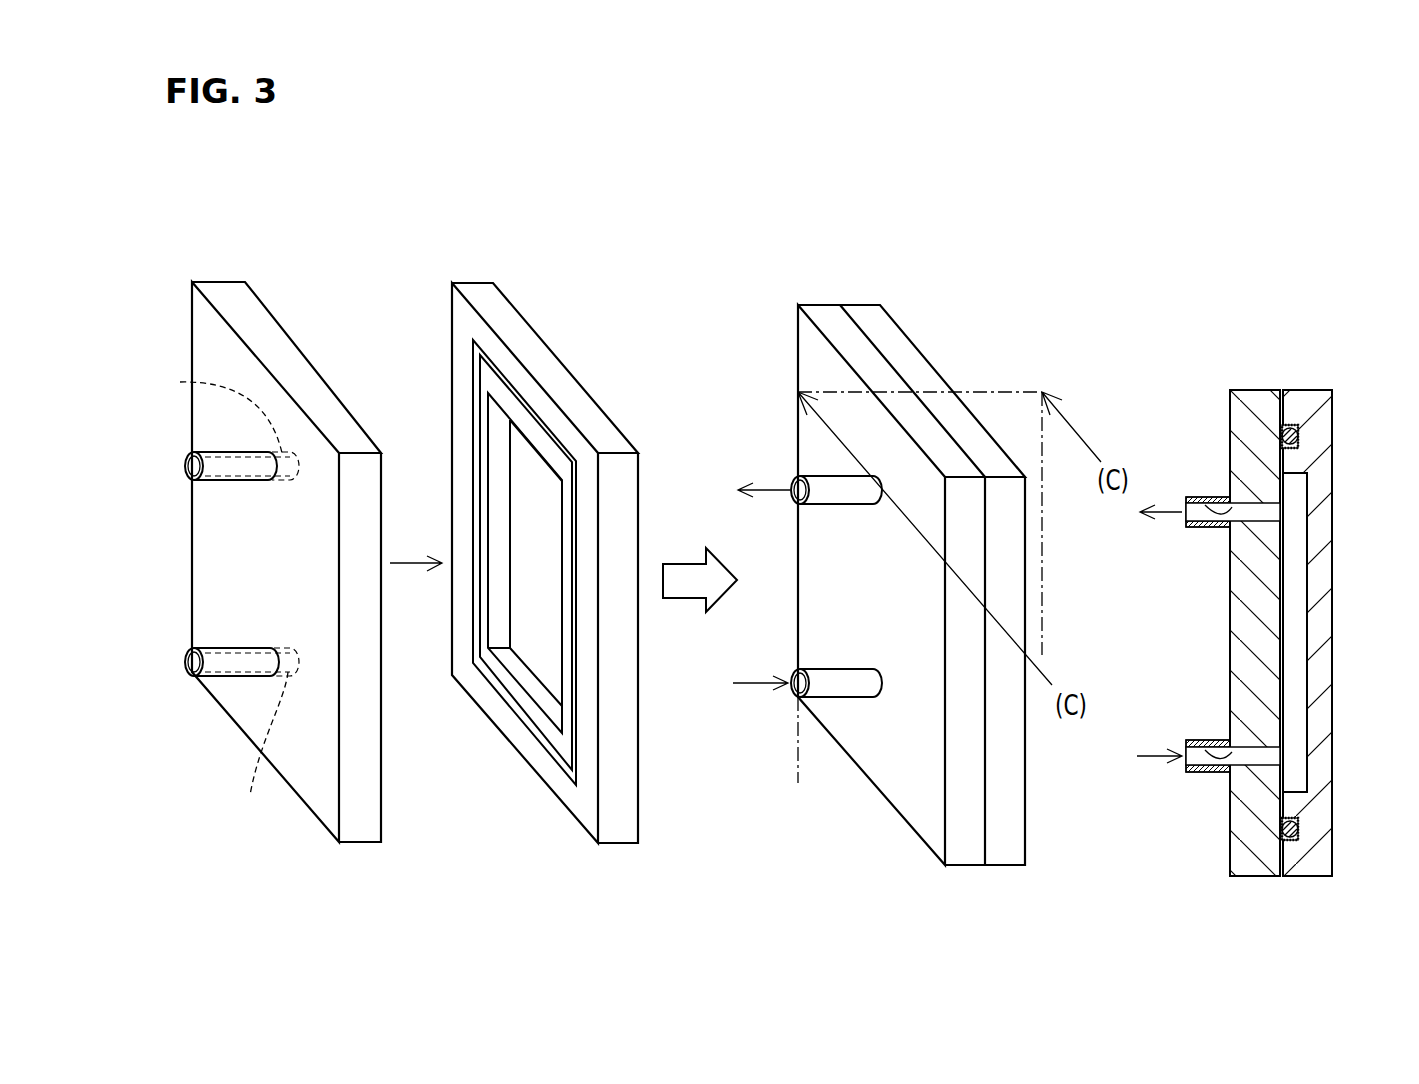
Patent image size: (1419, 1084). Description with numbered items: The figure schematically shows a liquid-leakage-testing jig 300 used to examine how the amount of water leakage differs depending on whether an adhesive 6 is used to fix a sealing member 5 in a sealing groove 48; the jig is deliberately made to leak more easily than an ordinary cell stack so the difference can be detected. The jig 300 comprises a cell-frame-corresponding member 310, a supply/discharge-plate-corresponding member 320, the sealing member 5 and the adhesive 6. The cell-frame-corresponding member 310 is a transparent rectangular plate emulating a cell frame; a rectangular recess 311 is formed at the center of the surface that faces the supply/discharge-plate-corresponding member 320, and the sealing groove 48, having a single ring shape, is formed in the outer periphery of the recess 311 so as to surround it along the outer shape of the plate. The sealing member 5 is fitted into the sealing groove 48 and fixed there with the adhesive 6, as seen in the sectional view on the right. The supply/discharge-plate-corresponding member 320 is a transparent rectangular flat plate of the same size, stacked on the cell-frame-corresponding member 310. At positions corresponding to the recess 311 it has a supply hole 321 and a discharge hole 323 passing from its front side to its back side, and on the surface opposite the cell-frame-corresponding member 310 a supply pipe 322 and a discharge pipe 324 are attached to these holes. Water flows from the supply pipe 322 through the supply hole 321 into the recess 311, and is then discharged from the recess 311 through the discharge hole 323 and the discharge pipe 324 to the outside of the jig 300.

The liquid-leakage-testing jig 300 is at (493, 183).
The cell-frame-corresponding member 310 is at (476, 265).
The supply/discharge-plate-corresponding member 320 is at (218, 265).
The recess 311 is at (537, 488).
The sealing groove 48 is at (507, 387).
The sealing member 5 is at (1283, 435).
The adhesive 6 is at (1300, 448).
The supply hole 321 is at (1200, 740).
The supply pipe 322 is at (220, 665).
The discharge hole 323 is at (1232, 512).
The discharge pipe 324 is at (227, 472).